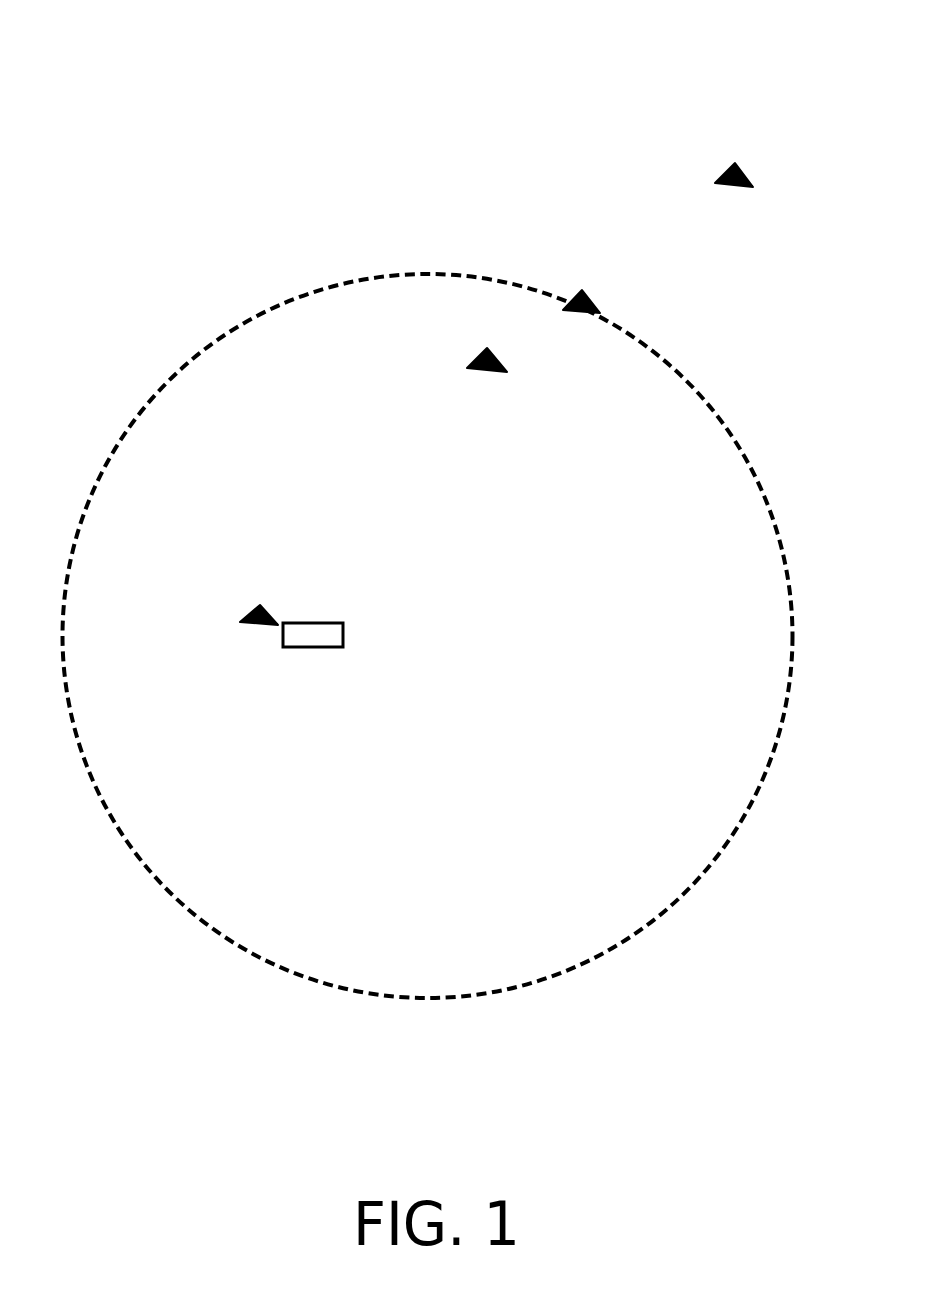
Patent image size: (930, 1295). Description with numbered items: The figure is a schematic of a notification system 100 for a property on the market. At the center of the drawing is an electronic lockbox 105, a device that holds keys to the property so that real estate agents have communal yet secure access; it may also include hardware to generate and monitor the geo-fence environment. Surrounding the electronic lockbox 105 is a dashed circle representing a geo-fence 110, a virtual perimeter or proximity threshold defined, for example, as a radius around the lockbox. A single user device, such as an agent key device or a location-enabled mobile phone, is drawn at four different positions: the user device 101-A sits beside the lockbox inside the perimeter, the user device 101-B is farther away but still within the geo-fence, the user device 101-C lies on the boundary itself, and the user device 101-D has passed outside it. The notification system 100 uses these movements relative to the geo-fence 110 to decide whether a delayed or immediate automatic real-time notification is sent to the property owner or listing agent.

The notification system 100 is at (790, 47).
The user device at position A 101-A is at (253, 630).
The user device at position B 101-B is at (480, 375).
The user device at position C 101-C is at (577, 315).
The user device at position D 101-D is at (730, 188).
The electronic lockbox 105 is at (312, 648).
The geo-fence 110 is at (215, 933).